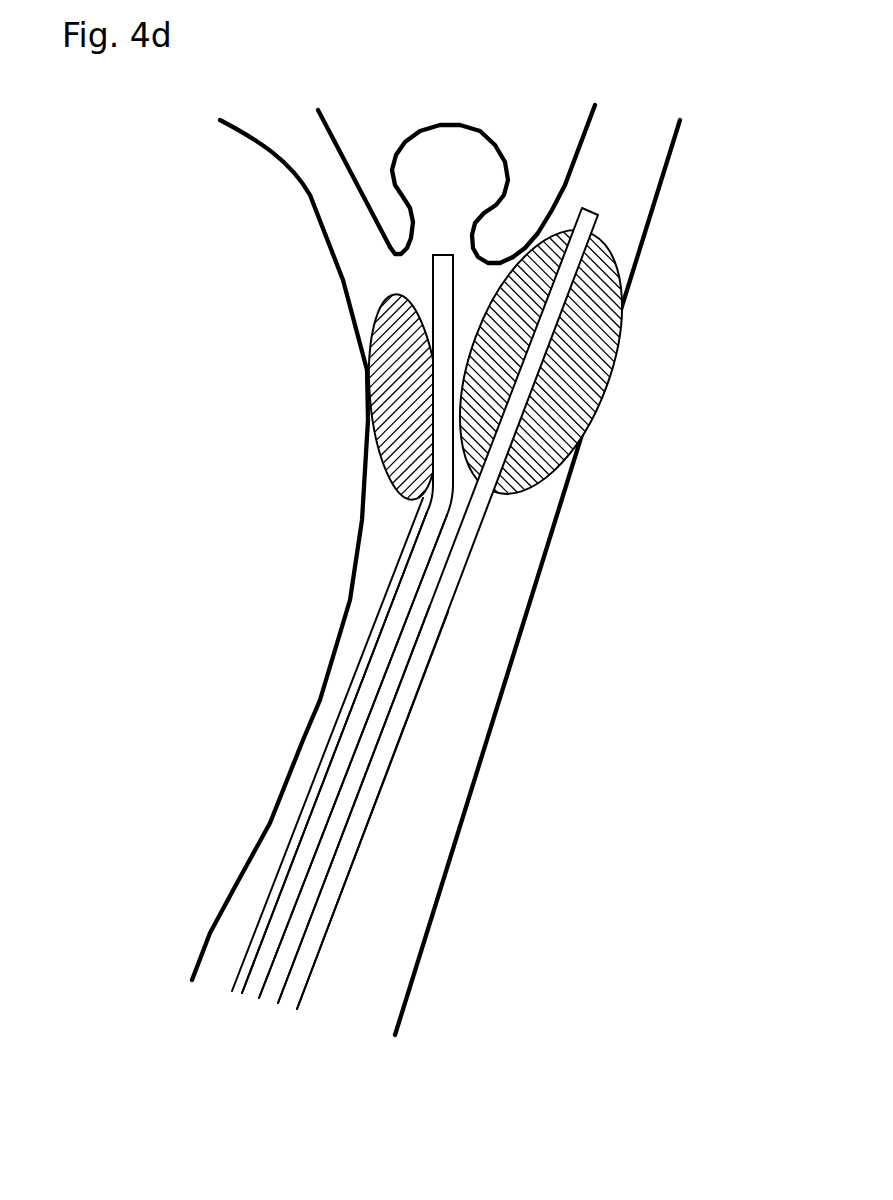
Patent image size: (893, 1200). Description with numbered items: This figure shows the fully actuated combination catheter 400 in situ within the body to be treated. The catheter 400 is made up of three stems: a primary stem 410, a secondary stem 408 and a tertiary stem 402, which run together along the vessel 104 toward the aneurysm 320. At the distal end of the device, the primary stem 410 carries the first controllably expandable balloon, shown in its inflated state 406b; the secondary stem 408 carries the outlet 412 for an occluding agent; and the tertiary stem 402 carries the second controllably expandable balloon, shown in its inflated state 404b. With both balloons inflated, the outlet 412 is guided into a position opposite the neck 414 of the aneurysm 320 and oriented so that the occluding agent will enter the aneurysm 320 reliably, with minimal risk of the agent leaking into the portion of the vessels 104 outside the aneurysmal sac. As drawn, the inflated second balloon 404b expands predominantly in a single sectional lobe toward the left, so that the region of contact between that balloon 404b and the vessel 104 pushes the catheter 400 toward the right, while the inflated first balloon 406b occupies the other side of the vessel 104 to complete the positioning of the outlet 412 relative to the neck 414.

The vessel 104 is at (333, 153).
The aneurysm 320 is at (461, 159).
The catheter 400 is at (478, 599).
The tertiary stem 402 is at (376, 620).
The second balloon (inflated state) 404b is at (390, 397).
The first balloon (inflated state) 406b is at (578, 373).
The secondary stem 408 is at (342, 762).
The primary stem 410 is at (361, 818).
The outlet 412 is at (443, 255).
The neck 414 is at (466, 226).